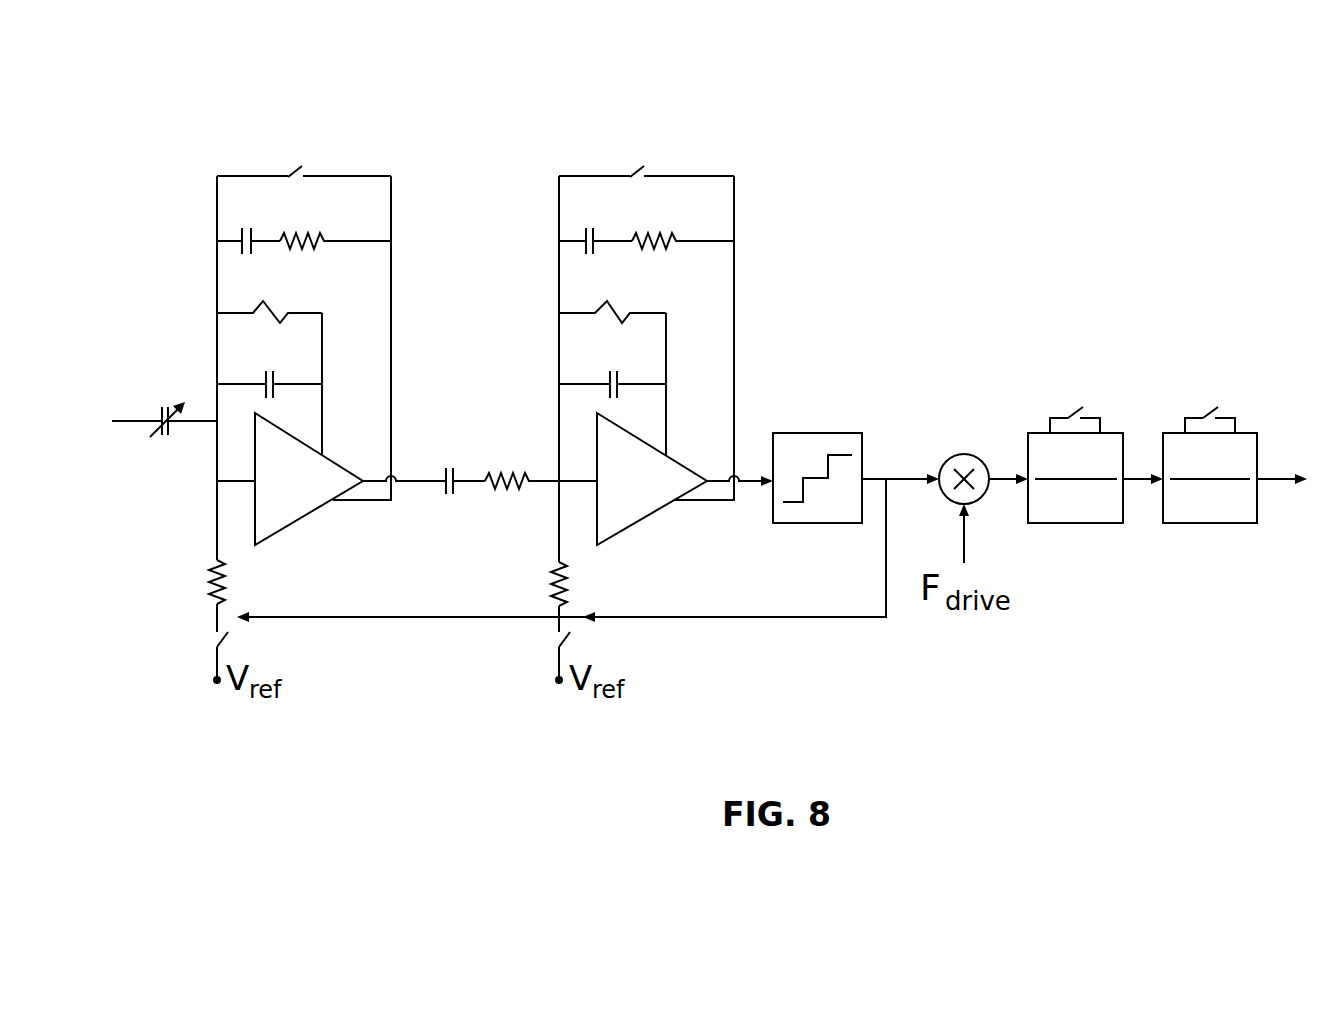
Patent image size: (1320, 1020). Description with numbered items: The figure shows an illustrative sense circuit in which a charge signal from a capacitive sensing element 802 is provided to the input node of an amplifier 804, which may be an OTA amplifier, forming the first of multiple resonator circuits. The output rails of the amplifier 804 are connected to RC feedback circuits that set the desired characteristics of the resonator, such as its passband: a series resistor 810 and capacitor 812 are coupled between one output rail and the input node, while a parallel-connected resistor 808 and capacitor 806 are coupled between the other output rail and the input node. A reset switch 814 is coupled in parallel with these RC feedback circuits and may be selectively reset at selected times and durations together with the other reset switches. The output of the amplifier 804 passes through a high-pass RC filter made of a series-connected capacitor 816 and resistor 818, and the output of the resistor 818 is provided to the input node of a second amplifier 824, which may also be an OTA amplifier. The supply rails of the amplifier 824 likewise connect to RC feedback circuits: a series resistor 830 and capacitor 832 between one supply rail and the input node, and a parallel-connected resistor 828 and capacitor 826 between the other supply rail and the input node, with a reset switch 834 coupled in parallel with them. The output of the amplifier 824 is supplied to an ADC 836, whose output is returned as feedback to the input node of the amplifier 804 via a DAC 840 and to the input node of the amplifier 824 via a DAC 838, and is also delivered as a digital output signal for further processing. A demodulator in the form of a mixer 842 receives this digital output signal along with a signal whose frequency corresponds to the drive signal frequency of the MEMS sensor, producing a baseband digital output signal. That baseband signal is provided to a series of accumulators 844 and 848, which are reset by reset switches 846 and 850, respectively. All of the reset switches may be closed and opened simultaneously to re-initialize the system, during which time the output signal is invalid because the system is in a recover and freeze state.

The capacitive sensing element 802 is at (165, 443).
The amplifier 804 is at (253, 505).
The capacitor 806 is at (272, 371).
The resistor 808 is at (275, 298).
The series resistor 810 is at (302, 227).
The capacitor 812 is at (237, 235).
The reset switch 814 is at (297, 162).
The capacitor 816 is at (449, 497).
The resistor 818 is at (500, 497).
The amplifier 824 is at (618, 532).
The capacitor 826 is at (612, 368).
The resistor 828 is at (617, 297).
The series resistor 830 is at (650, 225).
The capacitor 832 is at (585, 223).
The reset switch 834 is at (635, 162).
The ADC 836 is at (847, 430).
The DAC 838 is at (575, 585).
The DAC 840 is at (205, 580).
The mixer 842 is at (964, 452).
The accumulator 844 is at (1048, 525).
The reset switch 846 is at (1077, 400).
The accumulator 848 is at (1183, 525).
The reset switch 850 is at (1210, 400).